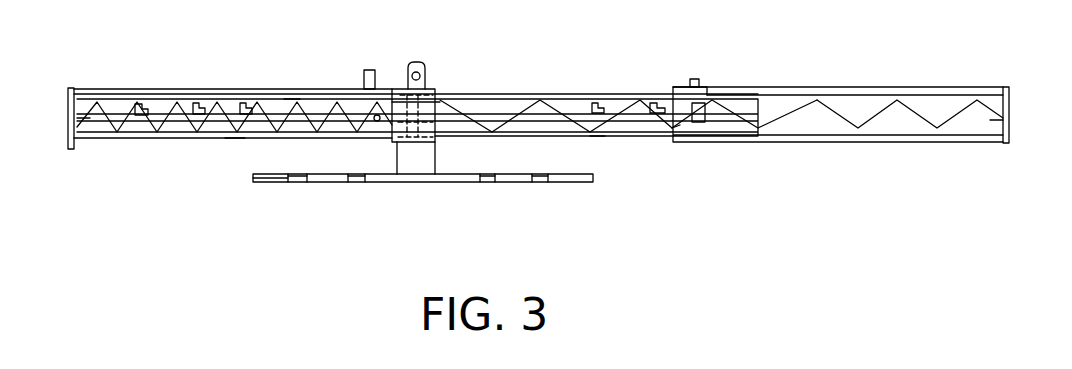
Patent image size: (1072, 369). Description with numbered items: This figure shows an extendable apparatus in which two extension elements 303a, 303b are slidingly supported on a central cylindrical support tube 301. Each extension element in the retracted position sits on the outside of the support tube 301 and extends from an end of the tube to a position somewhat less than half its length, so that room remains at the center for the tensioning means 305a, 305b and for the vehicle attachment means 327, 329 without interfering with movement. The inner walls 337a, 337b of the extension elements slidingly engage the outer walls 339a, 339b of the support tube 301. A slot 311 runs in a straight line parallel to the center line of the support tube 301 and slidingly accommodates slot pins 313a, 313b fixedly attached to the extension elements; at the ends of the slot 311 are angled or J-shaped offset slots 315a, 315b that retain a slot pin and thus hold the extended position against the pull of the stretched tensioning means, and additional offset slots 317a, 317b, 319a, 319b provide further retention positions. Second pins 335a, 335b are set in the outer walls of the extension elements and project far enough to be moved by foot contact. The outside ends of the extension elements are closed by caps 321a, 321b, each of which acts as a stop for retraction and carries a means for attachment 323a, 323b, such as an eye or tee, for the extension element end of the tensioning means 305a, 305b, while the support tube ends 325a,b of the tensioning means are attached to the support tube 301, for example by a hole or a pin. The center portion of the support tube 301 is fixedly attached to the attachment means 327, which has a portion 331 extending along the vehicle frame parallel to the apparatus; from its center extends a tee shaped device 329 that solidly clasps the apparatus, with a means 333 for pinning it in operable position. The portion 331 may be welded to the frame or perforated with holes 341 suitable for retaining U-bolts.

The support tube 301 is at (547, 103).
The extension element 303a is at (108, 89).
The extension element 303b is at (958, 87).
The tensioning means 305a is at (302, 124).
The tensioning means 305b is at (864, 122).
The slot 311 is at (537, 115).
The slot pin 313a is at (376, 122).
The slot pin 313b is at (673, 130).
The offset slot 315a is at (146, 104).
The offset slot 315b is at (700, 103).
The additional offset slot 317a is at (199, 103).
The additional offset slot 317b is at (660, 105).
The additional offset slot 319a is at (246, 103).
The additional offset slot 319b is at (597, 103).
The cap 321a is at (70, 149).
The cap 321b is at (1008, 143).
The means for attachment 323a is at (90, 120).
The means for attachment 323b is at (1000, 120).
The support tube end of the tensioning means 325a,b is at (440, 101).
The attachment means 327 is at (498, 182).
The tee shaped device 329 is at (435, 89).
The portion 331 is at (275, 182).
The means for pinning 333 is at (410, 62).
The second pin 335a is at (364, 78).
The second pin 335b is at (698, 82).
The inner wall 337a is at (290, 99).
The inner wall 337b is at (838, 100).
The outer wall 339a is at (235, 138).
The outer wall 339b is at (597, 137).
The holes 341 is at (352, 182).